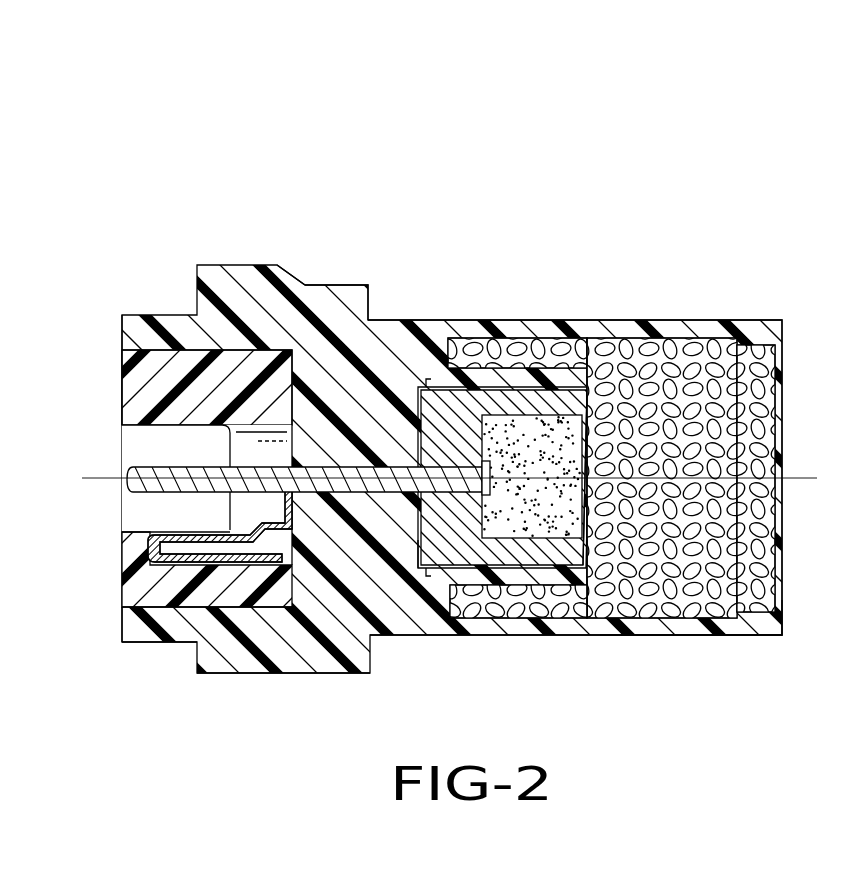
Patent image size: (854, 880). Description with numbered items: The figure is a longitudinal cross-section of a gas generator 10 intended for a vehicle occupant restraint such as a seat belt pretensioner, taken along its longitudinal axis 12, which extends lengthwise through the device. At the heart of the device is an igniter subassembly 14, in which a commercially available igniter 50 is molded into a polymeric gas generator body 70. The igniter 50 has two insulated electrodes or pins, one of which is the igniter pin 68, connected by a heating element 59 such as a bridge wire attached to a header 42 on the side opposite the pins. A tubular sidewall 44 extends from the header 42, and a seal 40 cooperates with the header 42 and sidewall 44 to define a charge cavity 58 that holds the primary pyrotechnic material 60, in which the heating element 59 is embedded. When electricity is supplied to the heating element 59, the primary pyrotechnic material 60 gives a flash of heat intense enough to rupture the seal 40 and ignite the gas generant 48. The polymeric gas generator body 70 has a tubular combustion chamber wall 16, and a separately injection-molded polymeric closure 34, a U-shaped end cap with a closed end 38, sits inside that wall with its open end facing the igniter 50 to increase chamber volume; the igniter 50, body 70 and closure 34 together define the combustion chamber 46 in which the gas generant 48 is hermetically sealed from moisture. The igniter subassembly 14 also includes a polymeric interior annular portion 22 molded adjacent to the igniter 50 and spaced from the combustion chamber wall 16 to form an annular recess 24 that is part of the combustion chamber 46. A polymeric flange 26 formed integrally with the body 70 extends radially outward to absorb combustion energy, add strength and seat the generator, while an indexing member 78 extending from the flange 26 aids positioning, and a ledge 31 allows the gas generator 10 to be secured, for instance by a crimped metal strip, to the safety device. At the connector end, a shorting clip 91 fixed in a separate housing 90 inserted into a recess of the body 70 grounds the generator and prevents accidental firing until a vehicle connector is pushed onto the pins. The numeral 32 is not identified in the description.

The gas generator 10 is at (398, 182).
The longitudinal axis 12 is at (130, 472).
The igniter subassembly 14 is at (218, 243).
The tubular combustion chamber wall 16 is at (621, 322).
The polymeric interior annular portion 22 is at (578, 345).
The annular recess 24 is at (488, 340).
The polymeric flange 26 is at (298, 676).
The ledge 31 is at (150, 646).
The front end wall 32 is at (122, 627).
The polymeric closure 34 is at (787, 342).
The closed end 38 is at (786, 594).
The seal 40 is at (580, 531).
The header 42 is at (457, 540).
The tubular sidewall 44 is at (533, 552).
The combustion chamber 46 is at (705, 372).
The gas generant 48 is at (678, 586).
The igniter 50 is at (412, 552).
The charge cavity 58 is at (565, 440).
The heating element 59 is at (491, 460).
The primary pyrotechnic material 60 is at (557, 510).
The igniter pin 68 is at (210, 466).
The polymeric gas generator body 70 is at (388, 348).
The indexing member 78 is at (277, 266).
The housing 90 is at (112, 370).
The shorting clip 91 is at (185, 533).